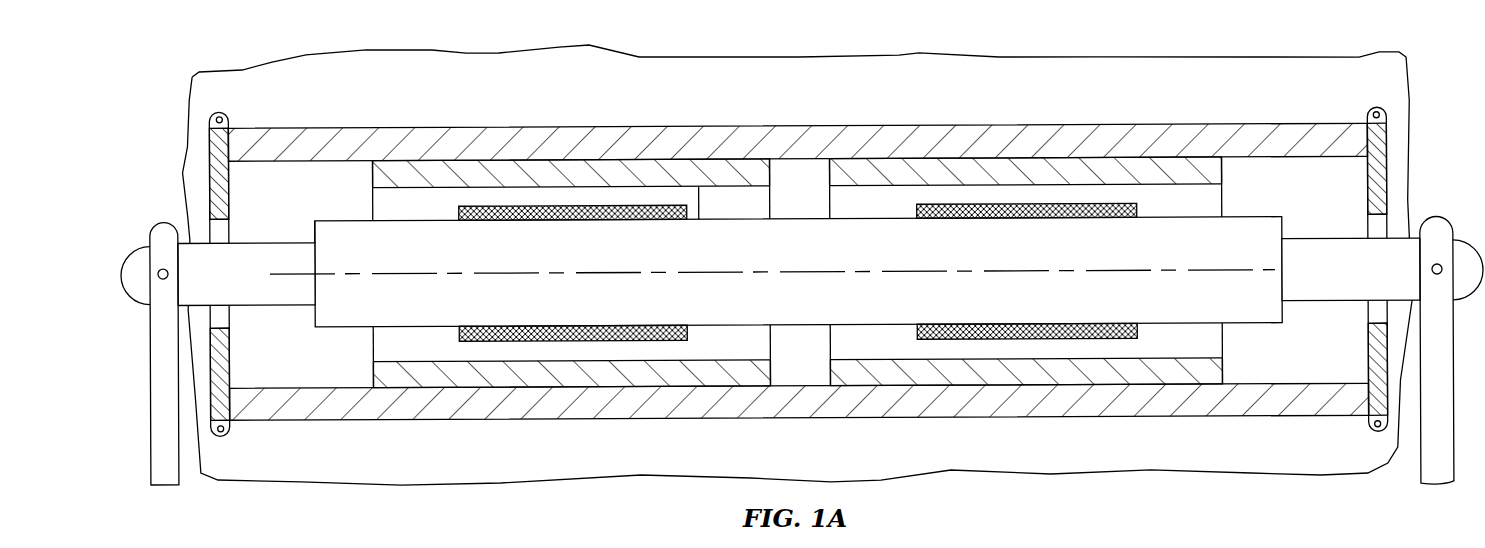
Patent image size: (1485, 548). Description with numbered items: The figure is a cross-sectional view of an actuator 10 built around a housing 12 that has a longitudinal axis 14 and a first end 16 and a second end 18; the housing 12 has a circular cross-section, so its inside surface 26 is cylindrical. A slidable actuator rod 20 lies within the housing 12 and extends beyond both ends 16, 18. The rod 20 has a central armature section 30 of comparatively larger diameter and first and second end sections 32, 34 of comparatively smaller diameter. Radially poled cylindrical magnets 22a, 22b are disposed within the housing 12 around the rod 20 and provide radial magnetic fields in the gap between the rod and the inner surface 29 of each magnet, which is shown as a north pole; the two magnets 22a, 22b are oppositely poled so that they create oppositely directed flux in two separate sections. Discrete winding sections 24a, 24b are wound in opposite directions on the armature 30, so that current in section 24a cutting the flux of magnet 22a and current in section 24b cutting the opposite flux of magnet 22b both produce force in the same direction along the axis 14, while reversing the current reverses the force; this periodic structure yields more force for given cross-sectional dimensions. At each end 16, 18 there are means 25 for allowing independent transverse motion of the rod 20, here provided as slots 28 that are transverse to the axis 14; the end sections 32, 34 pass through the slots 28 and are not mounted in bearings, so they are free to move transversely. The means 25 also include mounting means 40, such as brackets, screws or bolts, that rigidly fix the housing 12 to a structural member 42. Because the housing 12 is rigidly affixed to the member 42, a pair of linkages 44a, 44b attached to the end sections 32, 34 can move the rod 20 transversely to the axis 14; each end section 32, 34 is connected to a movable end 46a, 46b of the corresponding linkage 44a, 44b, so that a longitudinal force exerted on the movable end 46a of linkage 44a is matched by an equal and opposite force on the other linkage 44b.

The actuator 10 is at (283, 73).
The housing 12 is at (317, 125).
The longitudinal axis 14 is at (297, 268).
The first end 16 is at (210, 153).
The second end 18 is at (1390, 159).
The slidable actuator rod 20 is at (293, 238).
The radially poled cylindrical magnet 22a is at (340, 368).
The radially poled cylindrical magnet 22b is at (1254, 377).
The winding section 24a is at (708, 345).
The winding section 24b is at (892, 347).
The means for allowing transverse motion 25 is at (225, 314).
The inside surface 26 is at (1258, 166).
The slot 28 is at (213, 226).
The inner surface 29 is at (700, 187).
The central armature section 30 is at (788, 314).
The first end section 32 is at (210, 286).
The second end section 34 is at (1363, 288).
The mounting means 40 is at (227, 108).
The structural member 42 is at (722, 57).
The linkage 44a is at (165, 485).
The linkage 44b is at (1417, 465).
The movable end 46a is at (160, 228).
The movable end 46b is at (1435, 230).